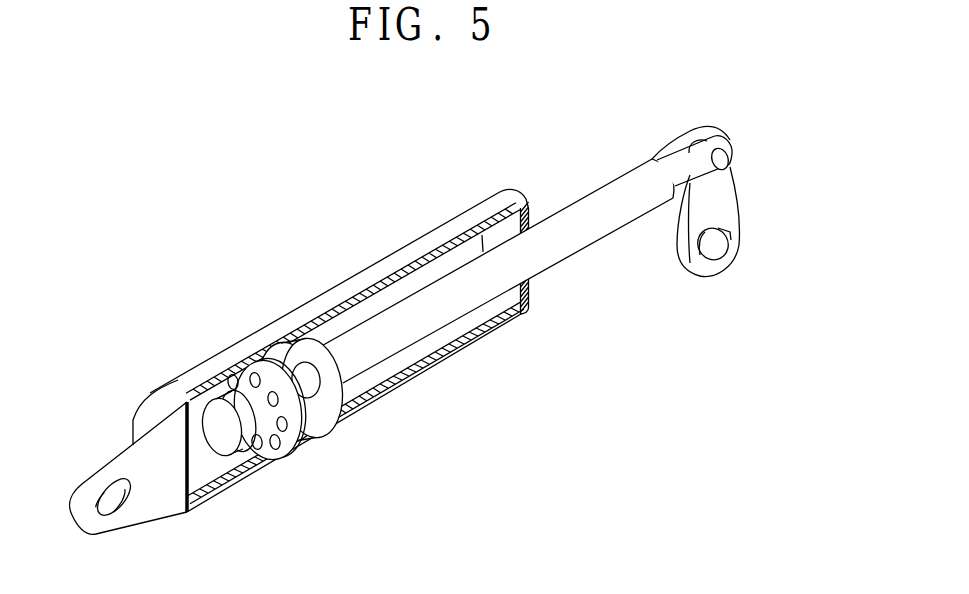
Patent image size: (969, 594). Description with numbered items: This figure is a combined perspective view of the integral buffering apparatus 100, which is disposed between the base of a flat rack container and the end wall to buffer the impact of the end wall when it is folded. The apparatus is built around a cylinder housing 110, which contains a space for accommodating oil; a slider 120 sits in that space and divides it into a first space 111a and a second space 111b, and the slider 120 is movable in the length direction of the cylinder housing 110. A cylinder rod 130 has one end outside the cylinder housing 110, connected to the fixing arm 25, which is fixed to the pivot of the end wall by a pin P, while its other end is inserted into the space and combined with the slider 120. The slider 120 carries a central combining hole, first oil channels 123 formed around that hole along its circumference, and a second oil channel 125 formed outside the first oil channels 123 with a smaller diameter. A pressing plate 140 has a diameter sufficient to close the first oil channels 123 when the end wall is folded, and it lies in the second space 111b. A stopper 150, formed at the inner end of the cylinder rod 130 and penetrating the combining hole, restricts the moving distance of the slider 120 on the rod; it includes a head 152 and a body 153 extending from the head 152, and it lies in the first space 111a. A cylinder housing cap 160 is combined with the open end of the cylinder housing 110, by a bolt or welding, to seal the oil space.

The integral buffering apparatus 100 is at (243, 120).
The cylinder housing 110 is at (365, 275).
The first space 111a is at (207, 472).
The second space 111b is at (437, 344).
The slider 120 is at (300, 443).
The first oil channels 123 is at (274, 447).
The second oil channel 125 is at (268, 377).
The cylinder rod 130 is at (599, 193).
The pressing plate 140 is at (340, 418).
The stopper 150 is at (233, 437).
The head 152 is at (222, 384).
The body 153 is at (248, 402).
The cylinder housing cap 160 is at (504, 189).
The pin P is at (734, 153).
The fixing arm 25 is at (735, 218).